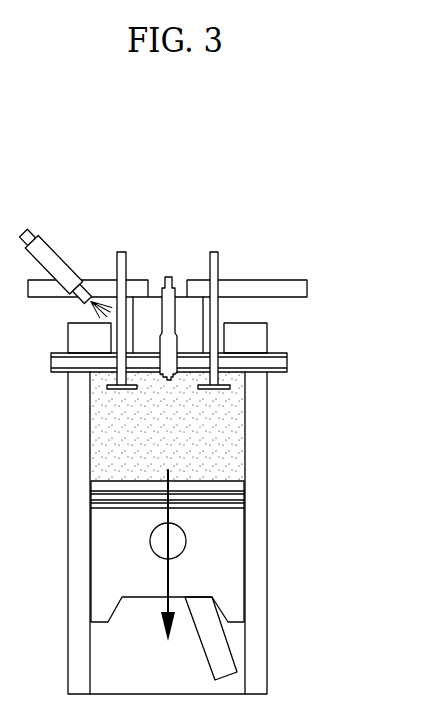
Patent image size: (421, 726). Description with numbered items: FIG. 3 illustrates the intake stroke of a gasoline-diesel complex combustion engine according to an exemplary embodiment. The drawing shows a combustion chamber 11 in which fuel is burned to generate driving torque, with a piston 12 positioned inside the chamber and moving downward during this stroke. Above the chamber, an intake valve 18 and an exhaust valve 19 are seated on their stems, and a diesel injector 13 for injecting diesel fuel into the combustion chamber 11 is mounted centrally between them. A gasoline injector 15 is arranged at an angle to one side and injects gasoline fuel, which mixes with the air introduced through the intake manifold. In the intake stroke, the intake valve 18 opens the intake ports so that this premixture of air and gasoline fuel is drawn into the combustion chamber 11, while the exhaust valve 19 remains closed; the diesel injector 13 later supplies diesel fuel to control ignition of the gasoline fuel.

The combustion chamber 11 is at (280, 633).
The piston 12 is at (105, 550).
The diesel injector 13 is at (167, 276).
The gasoline injector 15 is at (54, 258).
The intake valve 18 is at (122, 251).
The exhaust valve 19 is at (214, 251).